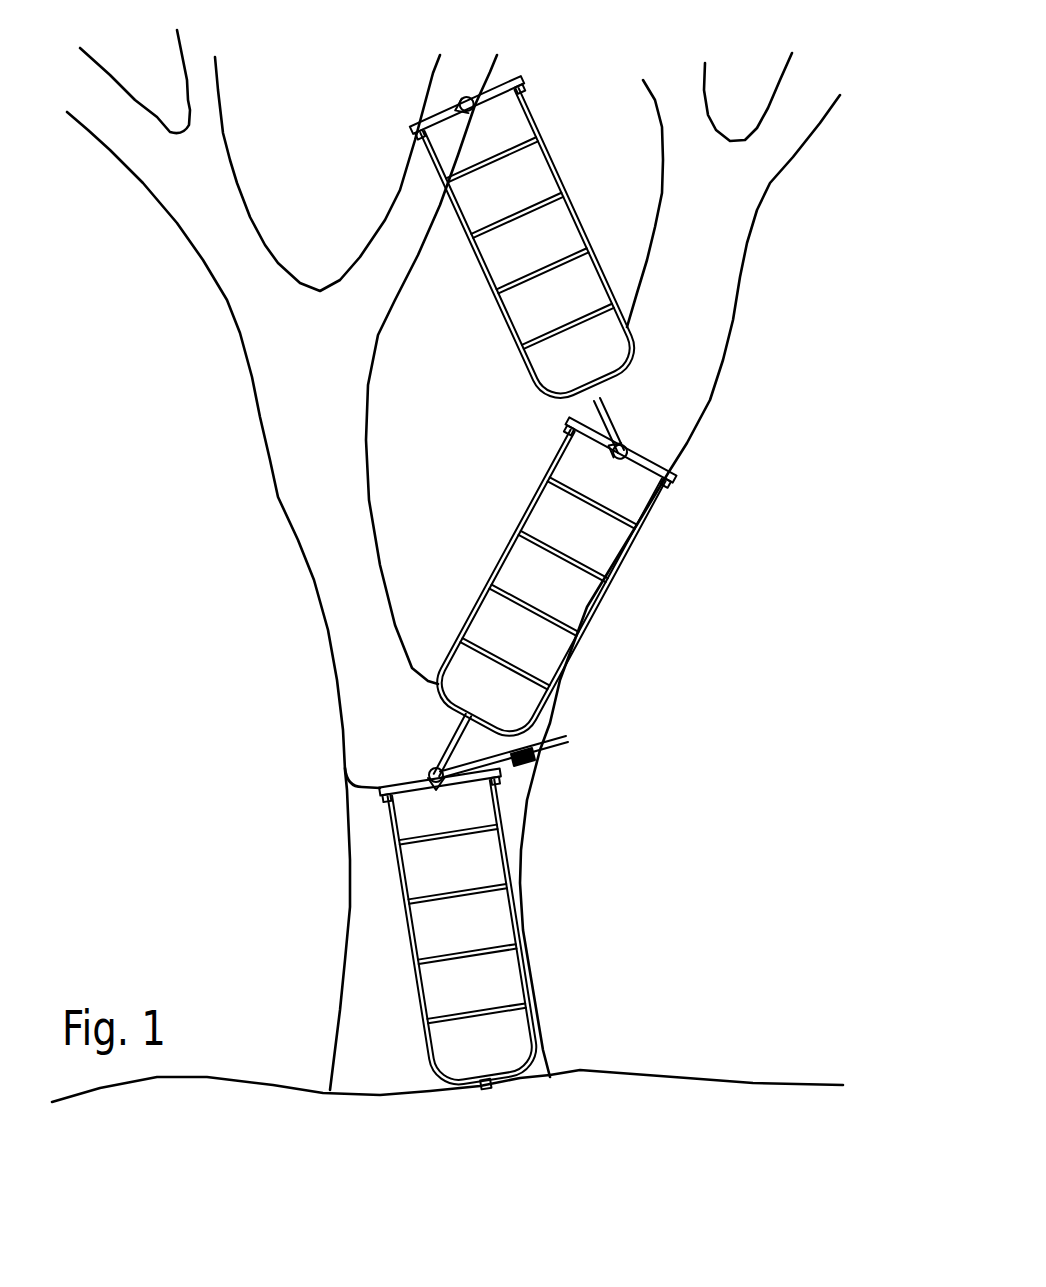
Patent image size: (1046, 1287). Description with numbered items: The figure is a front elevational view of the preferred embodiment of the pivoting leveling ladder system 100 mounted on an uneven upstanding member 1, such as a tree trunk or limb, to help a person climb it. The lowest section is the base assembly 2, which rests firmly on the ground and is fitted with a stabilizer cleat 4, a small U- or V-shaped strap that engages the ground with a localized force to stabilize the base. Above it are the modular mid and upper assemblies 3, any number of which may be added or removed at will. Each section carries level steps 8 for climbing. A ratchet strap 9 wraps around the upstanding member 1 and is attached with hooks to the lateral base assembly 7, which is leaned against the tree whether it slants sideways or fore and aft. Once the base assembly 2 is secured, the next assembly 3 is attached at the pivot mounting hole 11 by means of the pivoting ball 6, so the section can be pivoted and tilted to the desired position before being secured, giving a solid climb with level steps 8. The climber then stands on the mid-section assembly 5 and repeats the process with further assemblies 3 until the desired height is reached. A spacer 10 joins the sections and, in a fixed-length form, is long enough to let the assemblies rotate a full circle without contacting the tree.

The upstanding member 1 is at (363, 1003).
The base assembly 2 is at (508, 871).
The mid and upper assemblies 3 is at (578, 226).
The stabilizer cleat 4 is at (530, 1082).
The mid-section assembly 5 is at (543, 738).
The 360 degree pivoting ball 6 is at (430, 778).
The lateral base assembly 7 is at (408, 129).
The level steps 8 is at (420, 845).
The ratchet strap 9 is at (537, 761).
The spacer 10 is at (608, 460).
The 360 degree pivot mounting hole 11 is at (382, 786).
The 360 degree pivoting leveling ladder system 100 is at (494, 413).